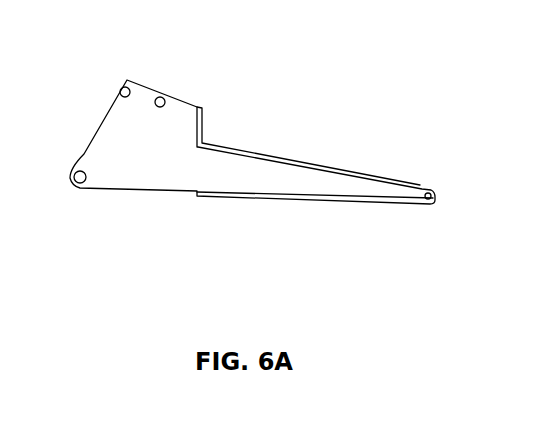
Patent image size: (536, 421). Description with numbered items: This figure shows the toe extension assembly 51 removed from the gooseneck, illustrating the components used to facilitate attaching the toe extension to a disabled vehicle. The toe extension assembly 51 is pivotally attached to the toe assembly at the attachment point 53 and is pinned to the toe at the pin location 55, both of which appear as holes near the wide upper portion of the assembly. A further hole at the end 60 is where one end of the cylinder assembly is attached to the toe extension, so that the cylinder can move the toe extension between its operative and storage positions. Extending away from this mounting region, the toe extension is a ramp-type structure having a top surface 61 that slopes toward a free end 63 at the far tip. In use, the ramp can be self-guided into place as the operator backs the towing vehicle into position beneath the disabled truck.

The toe extension assembly 51 is at (282, 156).
The pivotal attachment point 53 is at (123, 87).
The pin attachment point 55 is at (77, 189).
The cylinder assembly attachment end 60 is at (162, 97).
The top surface 61 is at (305, 159).
The free end 63 is at (433, 183).